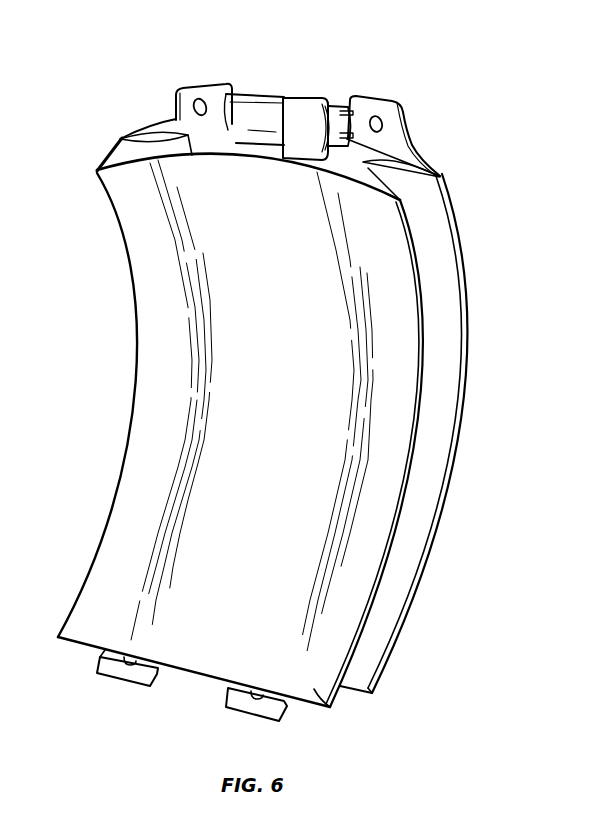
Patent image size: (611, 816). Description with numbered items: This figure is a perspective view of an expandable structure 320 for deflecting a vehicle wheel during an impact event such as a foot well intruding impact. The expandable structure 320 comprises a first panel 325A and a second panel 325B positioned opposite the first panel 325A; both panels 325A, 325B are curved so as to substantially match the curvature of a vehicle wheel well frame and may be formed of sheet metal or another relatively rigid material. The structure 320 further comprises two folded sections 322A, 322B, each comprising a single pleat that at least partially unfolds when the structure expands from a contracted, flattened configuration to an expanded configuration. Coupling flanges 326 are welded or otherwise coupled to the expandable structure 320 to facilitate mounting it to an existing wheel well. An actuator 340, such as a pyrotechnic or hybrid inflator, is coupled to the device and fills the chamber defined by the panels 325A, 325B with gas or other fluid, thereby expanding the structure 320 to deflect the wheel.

The expandable structure 320 is at (480, 140).
The first folded section 322A is at (112, 152).
The second folded section 322B is at (422, 227).
The first panel 325A is at (330, 707).
The second panel 325B is at (398, 610).
The coupling flange 326 is at (191, 96).
The actuator 340 is at (267, 112).